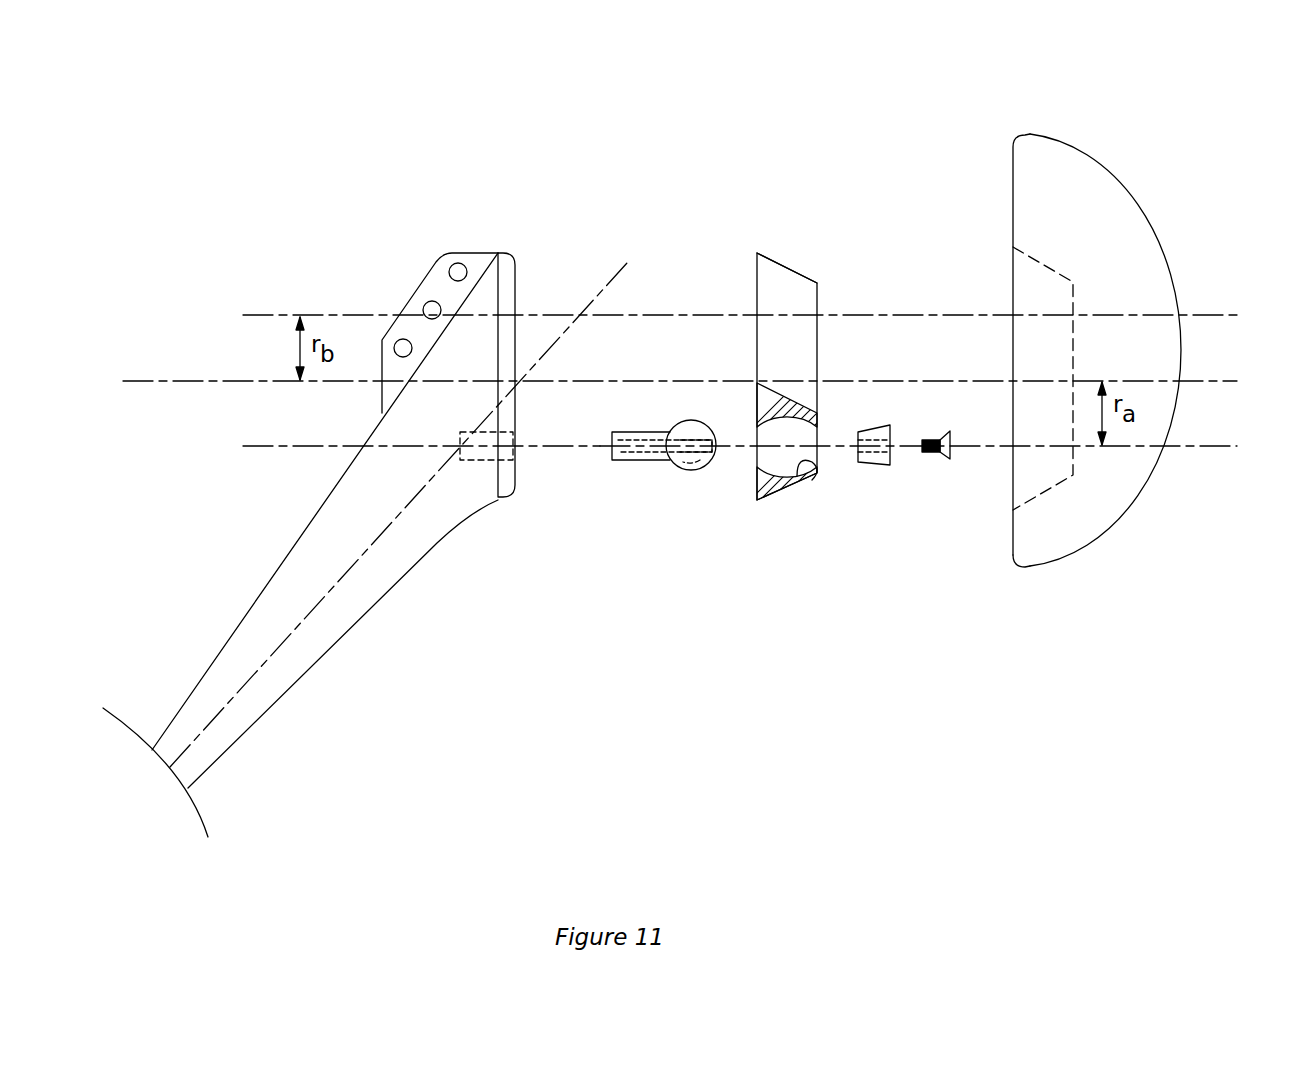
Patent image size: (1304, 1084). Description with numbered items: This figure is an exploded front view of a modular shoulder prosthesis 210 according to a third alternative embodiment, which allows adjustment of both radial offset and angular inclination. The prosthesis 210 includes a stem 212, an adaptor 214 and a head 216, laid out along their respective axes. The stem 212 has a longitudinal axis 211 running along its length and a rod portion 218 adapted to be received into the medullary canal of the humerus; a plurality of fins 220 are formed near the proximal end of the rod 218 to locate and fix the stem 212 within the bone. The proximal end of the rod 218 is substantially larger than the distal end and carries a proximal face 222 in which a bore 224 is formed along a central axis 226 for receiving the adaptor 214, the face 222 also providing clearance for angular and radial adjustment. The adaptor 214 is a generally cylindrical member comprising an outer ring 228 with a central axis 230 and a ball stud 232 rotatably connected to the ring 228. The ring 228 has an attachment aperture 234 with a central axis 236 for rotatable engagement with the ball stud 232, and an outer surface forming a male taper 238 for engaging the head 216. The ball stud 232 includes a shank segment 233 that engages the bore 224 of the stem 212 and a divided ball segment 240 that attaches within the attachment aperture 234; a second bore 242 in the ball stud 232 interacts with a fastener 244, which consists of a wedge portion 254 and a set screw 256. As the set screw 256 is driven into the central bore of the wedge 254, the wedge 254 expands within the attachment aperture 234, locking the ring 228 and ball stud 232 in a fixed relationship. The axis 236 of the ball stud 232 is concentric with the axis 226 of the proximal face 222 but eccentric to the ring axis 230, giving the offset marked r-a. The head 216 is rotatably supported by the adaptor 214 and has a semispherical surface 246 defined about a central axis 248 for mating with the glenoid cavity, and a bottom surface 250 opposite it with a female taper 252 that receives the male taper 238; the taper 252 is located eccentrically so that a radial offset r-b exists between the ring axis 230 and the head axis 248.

The shoulder prosthesis 210 is at (512, 132).
The arm axis 211 is at (170, 768).
The stem 212 is at (295, 545).
The adaptor 214 is at (801, 410).
The head 216 is at (1061, 334).
The rod portion 218 is at (265, 592).
The fins 220 is at (425, 290).
The proximal face 222 is at (517, 478).
The bore 224 is at (473, 462).
The central axis 226 is at (262, 449).
The outer ring 228 is at (775, 288).
The central axis 230 is at (160, 380).
The ball stud 232 is at (662, 464).
The shank segment 233 is at (630, 455).
The attachment aperture 234 is at (812, 470).
The central axis 236 is at (1203, 447).
The male taper 238 is at (802, 270).
The divided ball segment 240 is at (692, 457).
The second bore 242 is at (640, 432).
The fastener 244 is at (662, 462).
The semispherical surface 246 is at (1120, 193).
The central axis 248 is at (252, 314).
The bottom surface 250 is at (1012, 163).
The female taper 252 is at (1048, 490).
The wedge portion 254 is at (874, 432).
The set screw 256 is at (940, 440).